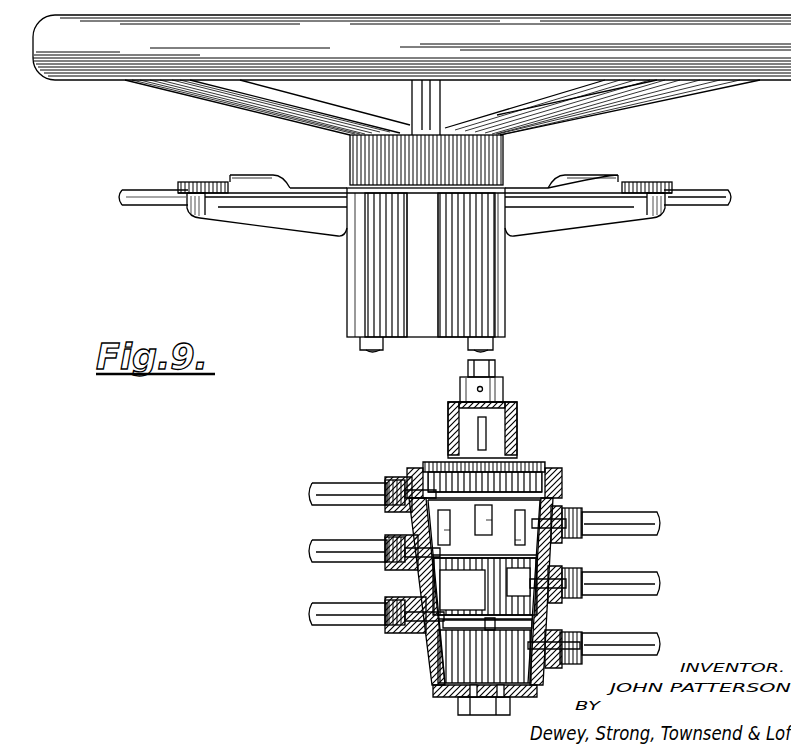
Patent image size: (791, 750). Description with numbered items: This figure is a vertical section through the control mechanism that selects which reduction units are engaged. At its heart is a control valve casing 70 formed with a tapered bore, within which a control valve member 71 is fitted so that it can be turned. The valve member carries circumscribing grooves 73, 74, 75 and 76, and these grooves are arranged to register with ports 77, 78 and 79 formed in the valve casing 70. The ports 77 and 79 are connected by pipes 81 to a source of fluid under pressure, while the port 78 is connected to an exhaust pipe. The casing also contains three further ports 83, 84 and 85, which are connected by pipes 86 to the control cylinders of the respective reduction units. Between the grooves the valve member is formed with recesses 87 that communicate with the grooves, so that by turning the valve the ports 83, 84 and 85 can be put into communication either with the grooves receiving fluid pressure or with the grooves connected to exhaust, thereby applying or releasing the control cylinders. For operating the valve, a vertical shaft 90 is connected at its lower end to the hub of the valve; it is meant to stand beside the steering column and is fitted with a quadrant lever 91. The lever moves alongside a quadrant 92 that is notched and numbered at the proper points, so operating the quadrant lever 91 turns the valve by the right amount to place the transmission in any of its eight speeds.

The control valve casing 70 is at (562, 486).
The control valve member 71 is at (438, 458).
The circumscribing groove 73 is at (522, 478).
The circumscribing groove 74 is at (462, 558).
The circumscribing groove 75 is at (452, 618).
The circumscribing groove 76 is at (443, 698).
The port 77 is at (410, 490).
The port 78 is at (412, 547).
The port 79 is at (414, 608).
The pipe 81 is at (331, 495).
The port 83 is at (548, 521).
The port 84 is at (548, 581).
The port 85 is at (552, 643).
The pipe 86 is at (634, 512).
The recess 87 is at (470, 652).
The vertical shaft 90 is at (490, 368).
The quadrant lever 91 is at (688, 193).
The quadrant 92 is at (524, 190).